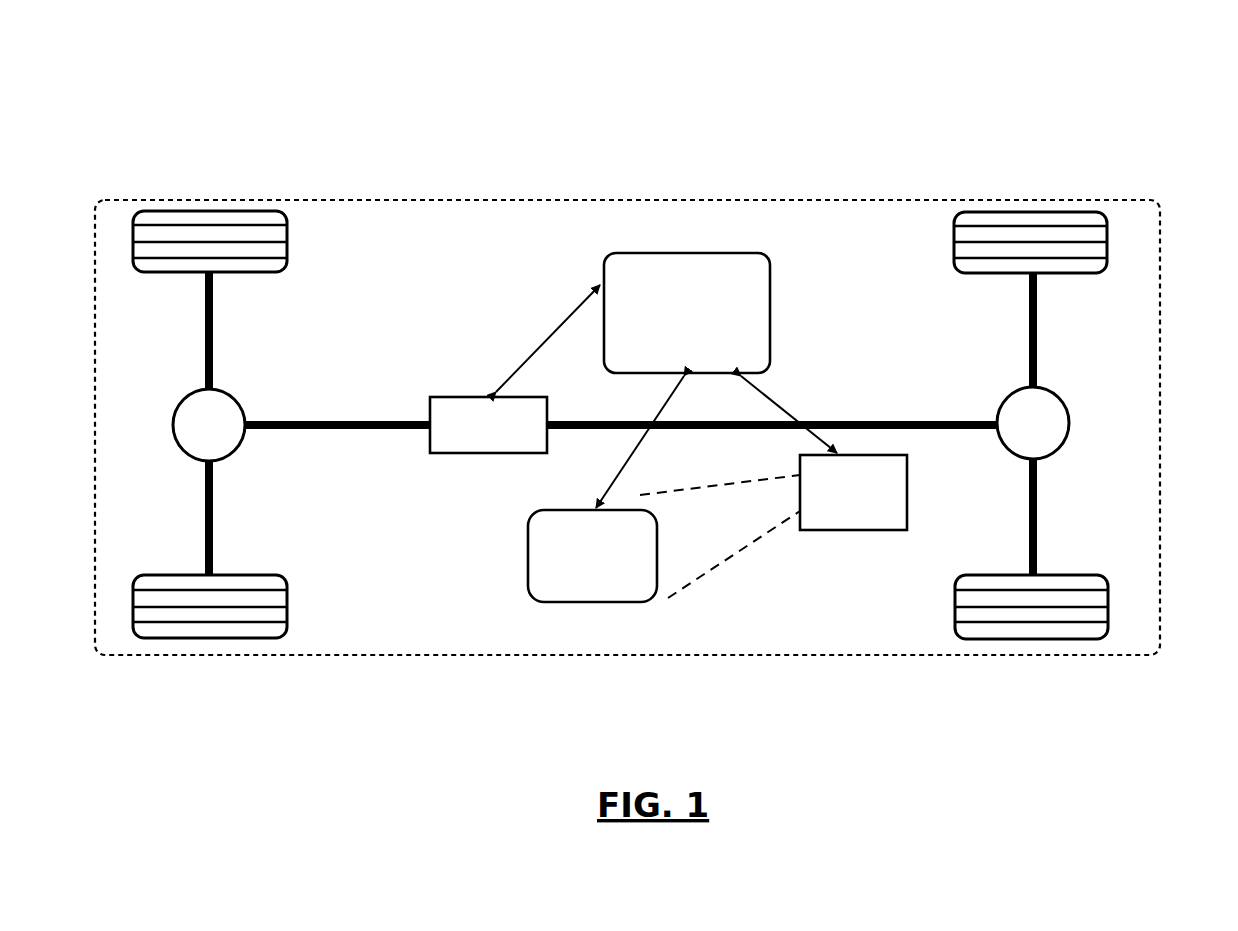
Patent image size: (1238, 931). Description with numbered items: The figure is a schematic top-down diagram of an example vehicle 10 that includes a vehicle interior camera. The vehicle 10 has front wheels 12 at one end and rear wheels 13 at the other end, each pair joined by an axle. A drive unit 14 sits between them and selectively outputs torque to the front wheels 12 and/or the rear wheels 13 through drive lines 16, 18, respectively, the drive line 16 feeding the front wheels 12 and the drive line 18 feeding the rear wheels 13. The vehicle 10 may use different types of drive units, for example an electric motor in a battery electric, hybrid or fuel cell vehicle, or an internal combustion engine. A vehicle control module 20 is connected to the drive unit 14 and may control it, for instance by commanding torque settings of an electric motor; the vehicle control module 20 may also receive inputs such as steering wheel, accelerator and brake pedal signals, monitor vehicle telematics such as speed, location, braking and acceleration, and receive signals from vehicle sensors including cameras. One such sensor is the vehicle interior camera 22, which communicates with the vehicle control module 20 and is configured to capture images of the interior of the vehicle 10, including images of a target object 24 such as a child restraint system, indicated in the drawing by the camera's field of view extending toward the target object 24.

The vehicle 10 is at (1162, 88).
The front wheels 12 is at (1011, 212).
The rear wheels 13 is at (181, 211).
The drive unit 14 is at (442, 453).
The drive line 16 is at (1000, 443).
The drive line 18 is at (180, 442).
The vehicle control module 20 is at (737, 253).
The vehicle interior camera 22 is at (857, 530).
The target object 24 is at (528, 558).